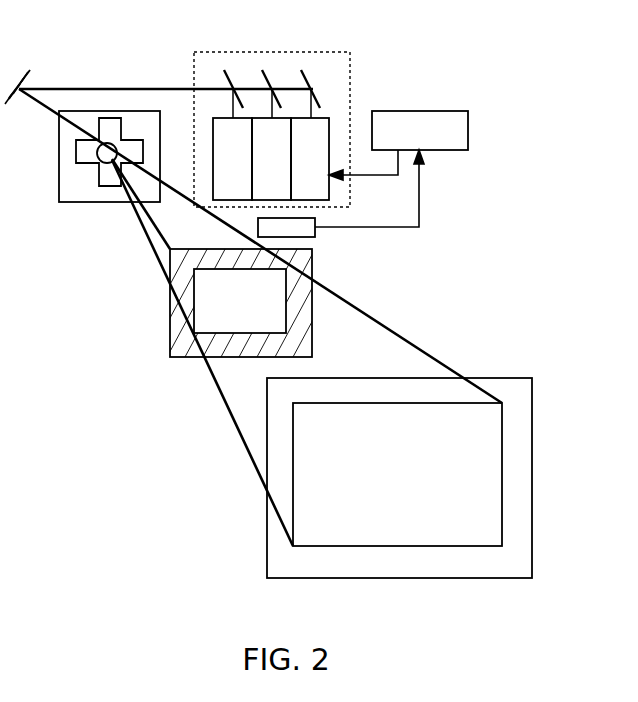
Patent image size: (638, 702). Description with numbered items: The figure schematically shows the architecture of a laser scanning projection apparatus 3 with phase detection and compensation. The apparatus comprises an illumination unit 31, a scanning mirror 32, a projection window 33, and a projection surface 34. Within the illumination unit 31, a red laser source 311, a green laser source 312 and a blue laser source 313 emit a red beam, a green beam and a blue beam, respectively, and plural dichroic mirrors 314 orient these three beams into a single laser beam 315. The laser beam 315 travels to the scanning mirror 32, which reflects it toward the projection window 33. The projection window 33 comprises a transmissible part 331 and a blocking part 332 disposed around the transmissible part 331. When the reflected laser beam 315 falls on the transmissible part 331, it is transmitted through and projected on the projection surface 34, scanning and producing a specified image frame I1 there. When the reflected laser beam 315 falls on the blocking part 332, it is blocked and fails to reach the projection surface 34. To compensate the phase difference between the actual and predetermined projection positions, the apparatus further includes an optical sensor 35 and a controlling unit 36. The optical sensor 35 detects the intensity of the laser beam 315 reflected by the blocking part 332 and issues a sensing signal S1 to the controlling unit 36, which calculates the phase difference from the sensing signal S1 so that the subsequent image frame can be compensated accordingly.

The laser scanning projection apparatus 3 is at (449, 41).
The illumination unit 31 is at (298, 112).
The red laser source 311 is at (295, 194).
The green laser source 312 is at (256, 194).
The blue laser source 313 is at (217, 194).
The dichroic mirrors 314 is at (227, 75).
The laser beam 315 is at (68, 89).
The scanning mirror 32 is at (58, 186).
The projection window 33 is at (255, 305).
The transmissible part 331 is at (277, 308).
The blocking part 332 is at (302, 348).
The projection surface 34 is at (426, 478).
The optical sensor 35 is at (309, 237).
The controlling unit 36 is at (461, 128).
The sensing signal S1 is at (380, 188).
The image frame I1 is at (474, 512).